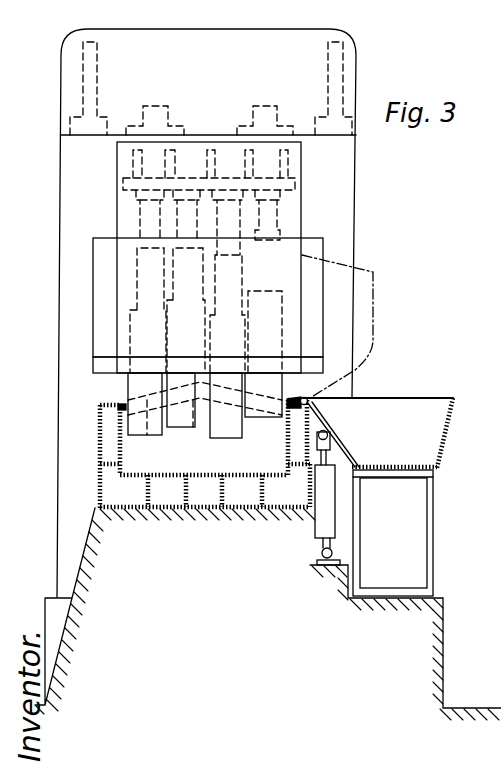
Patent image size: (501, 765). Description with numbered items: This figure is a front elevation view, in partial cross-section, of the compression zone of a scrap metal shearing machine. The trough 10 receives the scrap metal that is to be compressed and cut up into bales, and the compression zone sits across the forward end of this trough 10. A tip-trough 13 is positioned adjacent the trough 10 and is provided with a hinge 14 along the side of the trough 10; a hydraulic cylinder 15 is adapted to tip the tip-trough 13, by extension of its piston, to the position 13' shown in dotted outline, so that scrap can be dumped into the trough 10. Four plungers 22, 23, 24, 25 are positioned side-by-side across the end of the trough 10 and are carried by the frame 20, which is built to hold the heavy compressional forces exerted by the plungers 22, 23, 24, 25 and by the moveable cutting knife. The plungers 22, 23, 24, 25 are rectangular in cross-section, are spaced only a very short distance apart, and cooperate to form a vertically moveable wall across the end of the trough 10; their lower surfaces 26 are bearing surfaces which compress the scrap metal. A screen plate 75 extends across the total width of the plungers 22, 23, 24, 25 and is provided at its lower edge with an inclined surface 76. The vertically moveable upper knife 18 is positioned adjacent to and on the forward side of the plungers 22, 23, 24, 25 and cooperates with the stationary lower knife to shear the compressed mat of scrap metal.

The trough 10 is at (172, 478).
The tip-trough 13 is at (396, 497).
The tipped position of tip-trough 13' is at (363, 322).
The hinge 14 is at (308, 400).
The hydraulic cylinder 15 is at (323, 530).
The vertically moveable upper knife 18 is at (146, 432).
The frame 20 is at (343, 192).
The plunger 22 is at (140, 383).
The plunger 23 is at (177, 430).
The plunger 24 is at (217, 437).
The plunger 25 is at (250, 418).
The lower surface of plunger 26 is at (194, 432).
The screen plate 75 is at (123, 273).
The inclined surface 76 is at (100, 365).